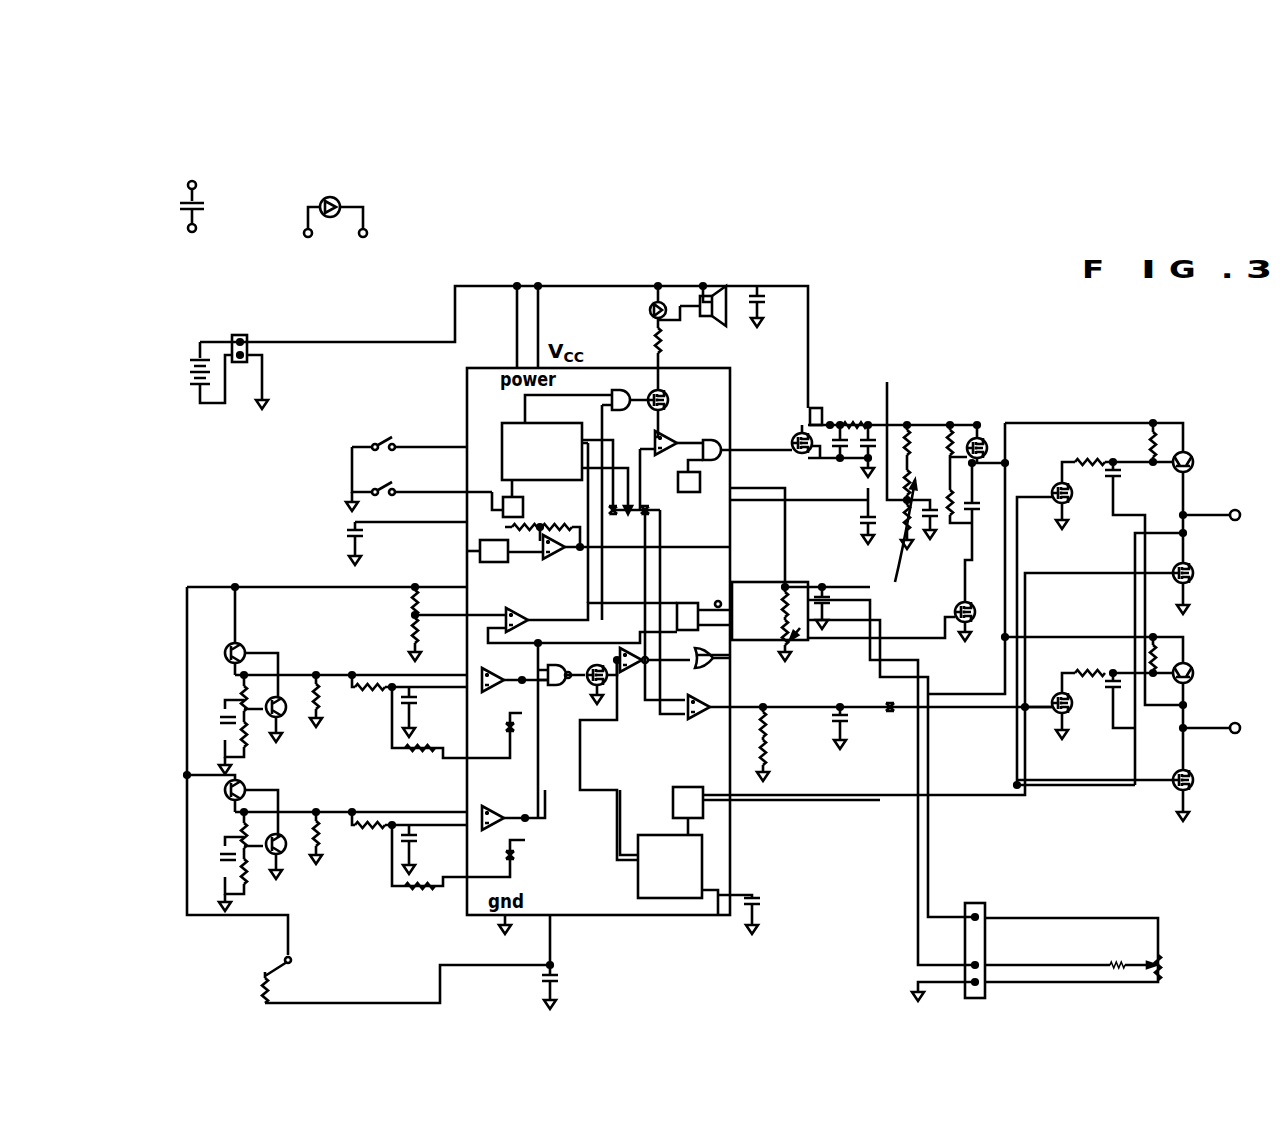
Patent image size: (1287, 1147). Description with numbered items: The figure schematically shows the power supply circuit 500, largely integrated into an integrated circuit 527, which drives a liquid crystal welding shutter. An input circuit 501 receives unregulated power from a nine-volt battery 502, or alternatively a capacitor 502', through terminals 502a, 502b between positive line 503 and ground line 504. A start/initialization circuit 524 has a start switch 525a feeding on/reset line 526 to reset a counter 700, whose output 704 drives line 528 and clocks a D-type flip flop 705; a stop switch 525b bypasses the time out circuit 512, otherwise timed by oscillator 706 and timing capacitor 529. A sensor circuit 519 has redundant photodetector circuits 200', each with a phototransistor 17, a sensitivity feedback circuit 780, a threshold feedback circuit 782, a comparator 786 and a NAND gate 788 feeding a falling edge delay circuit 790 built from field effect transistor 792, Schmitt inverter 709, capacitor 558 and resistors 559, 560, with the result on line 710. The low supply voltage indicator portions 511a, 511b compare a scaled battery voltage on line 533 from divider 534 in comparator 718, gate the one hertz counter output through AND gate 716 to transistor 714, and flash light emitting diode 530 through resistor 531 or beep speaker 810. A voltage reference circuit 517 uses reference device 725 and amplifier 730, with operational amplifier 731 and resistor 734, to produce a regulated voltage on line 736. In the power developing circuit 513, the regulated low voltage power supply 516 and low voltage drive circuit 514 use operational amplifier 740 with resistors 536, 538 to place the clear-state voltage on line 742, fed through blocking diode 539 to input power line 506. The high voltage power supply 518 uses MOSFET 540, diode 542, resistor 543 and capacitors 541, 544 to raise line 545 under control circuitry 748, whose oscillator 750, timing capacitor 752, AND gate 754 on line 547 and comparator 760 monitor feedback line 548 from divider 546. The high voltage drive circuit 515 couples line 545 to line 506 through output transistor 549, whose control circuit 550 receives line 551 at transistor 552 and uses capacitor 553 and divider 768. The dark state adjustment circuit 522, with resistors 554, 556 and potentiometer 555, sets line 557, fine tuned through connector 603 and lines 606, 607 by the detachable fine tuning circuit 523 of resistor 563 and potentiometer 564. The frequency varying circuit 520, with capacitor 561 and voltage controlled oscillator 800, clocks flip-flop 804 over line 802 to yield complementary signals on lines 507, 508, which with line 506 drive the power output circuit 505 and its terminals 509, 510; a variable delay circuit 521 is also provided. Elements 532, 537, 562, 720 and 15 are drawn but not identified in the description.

The power supply circuit 500 is at (772, 214).
The input circuit 501 is at (252, 314).
The electrical storage battery 502 is at (206, 357).
The capacitor 502' is at (168, 204).
The terminal 502a is at (196, 187).
The terminal 502b is at (196, 231).
The positive electrical line 503 is at (336, 338).
The negative line 504 is at (264, 384).
The power output circuit 505 is at (1086, 408).
The input power line 506 is at (1005, 422).
The output control line 507 is at (916, 770).
The output control line 508 is at (896, 810).
The terminal 509 is at (1214, 515).
The terminal 510 is at (1214, 728).
The low supply voltage indicator circuit portion 511a is at (395, 606).
The low supply voltage indicator circuit portion 511b is at (704, 300).
The time out circuit 512 is at (330, 514).
The power developing circuit 513 is at (916, 320).
The low voltage drive circuit 514 is at (850, 706).
The high voltage drive circuit 515 is at (937, 363).
The regulated low voltage power supply 516 is at (740, 746).
The voltage reference circuit 517 is at (445, 566).
The high voltage power supply 518 is at (820, 346).
The sensor circuit 519 is at (172, 622).
The frequency varying circuit 520 is at (716, 844).
The variable delay circuit 521 is at (240, 986).
The dark state voltage adjustment circuit 522 is at (784, 537).
The fine tuning circuit 523 is at (340, 455).
The start/initialization circuit 524 is at (330, 470).
The momentary contact start switch 525a is at (376, 418).
The momentary stop switch 525b is at (391, 566).
The on/reset input line 526 is at (397, 440).
The integrated circuit 527 is at (405, 480).
The line 528 is at (248, 585).
The timing capacitor 529 is at (348, 534).
The light emitting diode 530 is at (648, 308).
The resistor 531 is at (650, 337).
The inductor 532 is at (668, 346).
The line 533 is at (452, 628).
The resistor divider network 534 is at (410, 600).
The feedback resistor 536 is at (768, 720).
The resistor tap 537 is at (768, 736).
The resistor 538 is at (776, 742).
The blocking diode 539 is at (806, 398).
The field effect transistor 540 is at (808, 412).
The capacitor 541 is at (828, 454).
The diode 542 is at (822, 410).
The resistor 543 is at (858, 424).
The capacitor 544 is at (855, 516).
The high voltage line 545 is at (925, 487).
The resistor divider circuit 546 is at (888, 427).
The line 547 is at (771, 463).
The feedback line 548 is at (815, 511).
The output field effect transistor 549 is at (974, 436).
The control circuit 550 is at (972, 600).
The line 551 is at (908, 636).
The field effect transistor 552 is at (958, 625).
The capacitor 553 is at (986, 470).
The resistor 554 is at (801, 590).
The adjustable potentiometer 555 is at (810, 622).
The resistor 556 is at (831, 689).
The line 557 is at (724, 585).
The capacitor 558 is at (540, 980).
The resistor 559 is at (274, 984).
The resistor 560 is at (262, 962).
The capacitor 561 is at (762, 915).
The line 562 is at (386, 495).
The resistor 563 is at (1110, 962).
The potentiometer 564 is at (1162, 962).
The connector 603 is at (975, 902).
The line 606 is at (1064, 985).
The line 607 is at (1148, 962).
The counter 700 is at (445, 494).
The counter output 704 is at (582, 432).
The D-type flip flop 705 is at (675, 612).
The free running oscillator circuit 706 is at (445, 524).
The Schmitt invertor 709 is at (655, 674).
The line 710 is at (640, 648).
The transistor 714 is at (672, 400).
The AND gate 716 is at (628, 393).
The comparator 718 is at (517, 607).
The comparator 720 is at (516, 650).
The voltage reference device 725 is at (445, 544).
The amplifier 730 is at (535, 562).
The operational amplifier 731 is at (523, 507).
The resistor 734 is at (547, 522).
The line 736 is at (728, 560).
The operational amplifier 740 is at (688, 715).
The line 742 is at (750, 700).
The control circuitry 748 is at (700, 440).
The free running oscillator 750 is at (700, 492).
The external timing capacitor 752 is at (826, 574).
The AND gate 754 is at (723, 446).
The comparator 760 is at (703, 500).
The resistor divider circuit 768 is at (907, 531).
The sensitivity feedback circuit 780 is at (292, 744).
The threshold feedback circuit 782 is at (378, 746).
The comparator 786 is at (500, 692).
The NAND gate 788 is at (586, 684).
The falling edge delay circuit 790 is at (616, 714).
The field effect transistor 792 is at (589, 667).
The voltage controlled oscillator 800 is at (638, 872).
The line 802 is at (704, 836).
The flip-flop 804 is at (678, 790).
The speaker 810 is at (728, 310).
The photosensor 15 is at (216, 652).
The phototransistor 17 is at (241, 644).
The photodetector circuit 200' is at (300, 742).